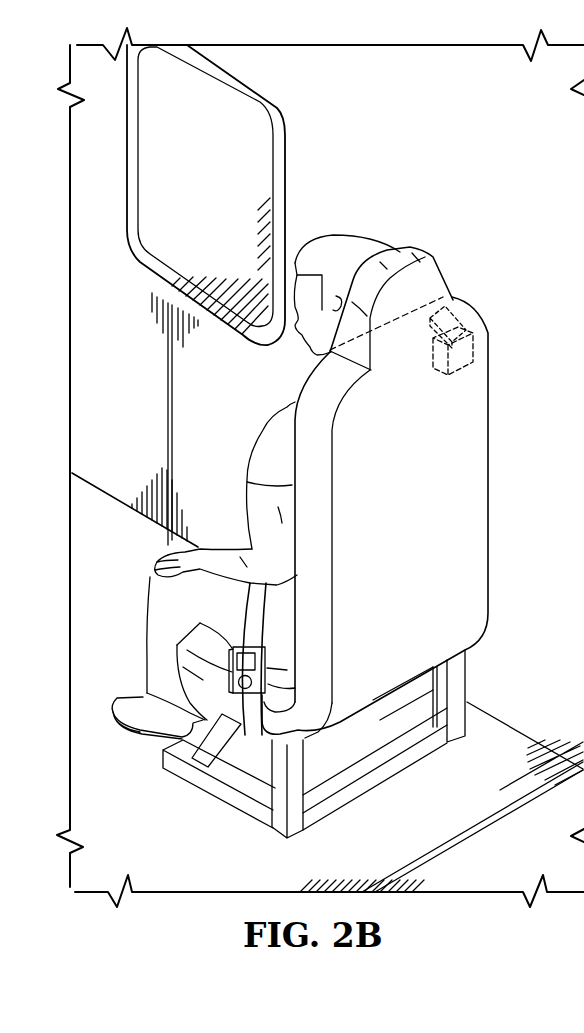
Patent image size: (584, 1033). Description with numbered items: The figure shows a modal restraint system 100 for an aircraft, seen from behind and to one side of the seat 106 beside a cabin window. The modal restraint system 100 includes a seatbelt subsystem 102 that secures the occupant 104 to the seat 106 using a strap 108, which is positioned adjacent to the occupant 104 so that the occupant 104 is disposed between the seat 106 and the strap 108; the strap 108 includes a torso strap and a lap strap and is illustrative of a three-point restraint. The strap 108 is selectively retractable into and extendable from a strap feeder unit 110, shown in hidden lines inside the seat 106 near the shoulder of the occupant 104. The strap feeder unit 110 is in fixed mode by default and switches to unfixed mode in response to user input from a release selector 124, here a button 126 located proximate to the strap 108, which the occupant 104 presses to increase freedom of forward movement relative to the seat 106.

The modal restraint system 100 is at (0, 152).
The seatbelt subsystem 102 is at (267, 609).
The occupant 104 is at (368, 235).
The seat 106 is at (475, 449).
The strap 108 is at (443, 297).
The strap feeder unit 110 is at (467, 352).
The release selector 124 is at (339, 663).
The button 126 is at (257, 683).